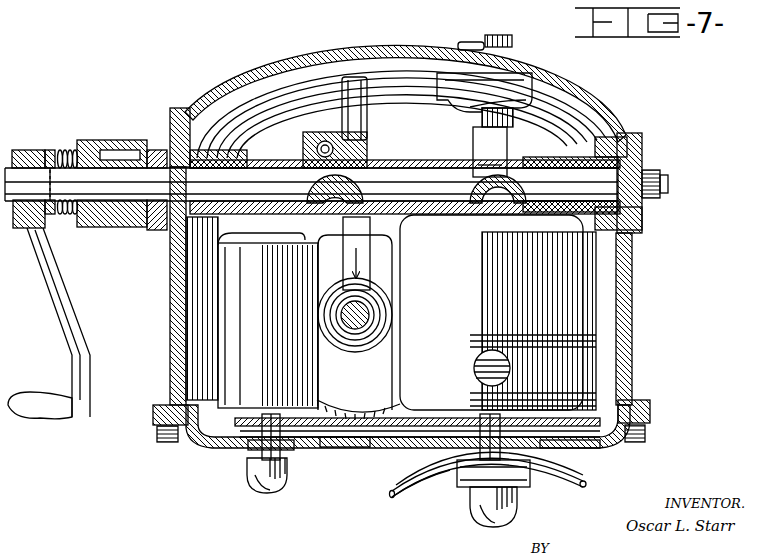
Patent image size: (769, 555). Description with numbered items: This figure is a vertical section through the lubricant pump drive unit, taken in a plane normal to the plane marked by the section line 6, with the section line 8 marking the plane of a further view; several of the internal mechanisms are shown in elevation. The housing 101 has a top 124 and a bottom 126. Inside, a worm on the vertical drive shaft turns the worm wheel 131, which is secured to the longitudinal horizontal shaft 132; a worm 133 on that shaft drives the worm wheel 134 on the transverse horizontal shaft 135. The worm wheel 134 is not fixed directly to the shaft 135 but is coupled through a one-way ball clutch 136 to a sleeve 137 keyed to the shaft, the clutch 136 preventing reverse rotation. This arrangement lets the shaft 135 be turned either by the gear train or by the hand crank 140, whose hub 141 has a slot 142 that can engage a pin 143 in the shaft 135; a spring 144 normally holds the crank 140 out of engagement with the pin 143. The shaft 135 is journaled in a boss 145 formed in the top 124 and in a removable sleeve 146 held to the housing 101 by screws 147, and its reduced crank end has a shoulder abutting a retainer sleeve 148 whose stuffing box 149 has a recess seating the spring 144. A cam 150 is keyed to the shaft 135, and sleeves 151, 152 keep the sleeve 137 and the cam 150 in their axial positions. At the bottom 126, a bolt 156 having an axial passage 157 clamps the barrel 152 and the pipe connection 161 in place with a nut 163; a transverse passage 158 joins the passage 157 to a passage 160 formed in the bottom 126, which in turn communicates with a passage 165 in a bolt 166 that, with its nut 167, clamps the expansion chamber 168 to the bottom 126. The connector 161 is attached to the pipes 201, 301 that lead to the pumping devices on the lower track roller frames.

The housing 101 is at (663, 313).
The top of the housing 124 is at (588, 98).
The bottom of the housing 126 is at (203, 450).
The worm wheel 131 is at (364, 405).
The longitudinal horizontal shaft 132 is at (366, 311).
The worm 133 is at (376, 352).
The worm wheel 134 is at (362, 260).
The transverse horizontal shaft 135 is at (600, 176).
The one-way ball clutch 136 is at (325, 141).
The sleeve 137 is at (367, 160).
The hand crank 140 is at (42, 403).
The hub 141 is at (17, 150).
The slot 142 is at (58, 132).
The pin 143 is at (50, 235).
The spring 144 is at (68, 150).
The boss 145 is at (227, 160).
The removable sleeve 146 is at (545, 160).
The screws 147 is at (648, 170).
The retainer sleeve 148 is at (165, 227).
The stuffing box 149 is at (107, 232).
The cam 150 is at (497, 140).
The sleeve 151 is at (460, 229).
The barrel 152 is at (409, 164).
The bolt 156 is at (548, 456).
The passage 157 is at (396, 468).
The transverse passage 158 is at (470, 438).
The passage 160 is at (352, 444).
The pipe connection 161 is at (522, 486).
The nut 163 is at (485, 513).
The passage 165 is at (255, 447).
The bolt 166 is at (262, 450).
The nut 167 is at (270, 492).
The expansion chamber 168 is at (258, 343).
The pipe 201 is at (586, 486).
The pipe 301 is at (401, 486).
The section line 6 is at (465, 20).
The section line 8 is at (187, 133).